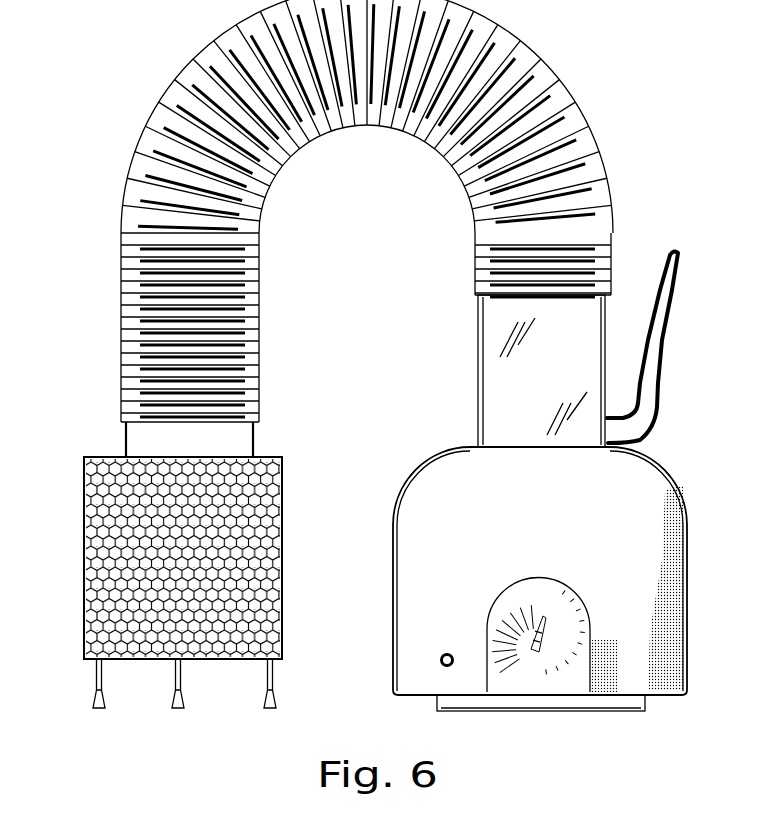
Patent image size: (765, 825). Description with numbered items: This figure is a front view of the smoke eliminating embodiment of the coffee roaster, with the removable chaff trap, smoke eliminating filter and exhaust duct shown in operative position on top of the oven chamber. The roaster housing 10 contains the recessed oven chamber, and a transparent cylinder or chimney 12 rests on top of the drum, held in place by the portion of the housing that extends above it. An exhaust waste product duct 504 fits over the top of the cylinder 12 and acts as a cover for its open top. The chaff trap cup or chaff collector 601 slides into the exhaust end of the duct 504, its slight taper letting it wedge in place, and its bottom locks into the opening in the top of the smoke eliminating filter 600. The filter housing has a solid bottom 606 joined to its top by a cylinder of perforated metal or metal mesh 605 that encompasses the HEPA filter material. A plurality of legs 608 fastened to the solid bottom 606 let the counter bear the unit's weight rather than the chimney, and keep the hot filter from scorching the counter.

The exhaust waste product duct 504 is at (582, 116).
The transparent cylinder or chimney 12 is at (478, 368).
The roaster housing 10 is at (400, 494).
The smoke eliminating filter 600 is at (178, 535).
The chaff trap cup or chaff collector 601 is at (125, 441).
The perforated metal or metal mesh cylinder 605 is at (112, 532).
The solid bottom of the smoke eliminating filter unit 606 is at (84, 665).
The legs 608 is at (278, 680).